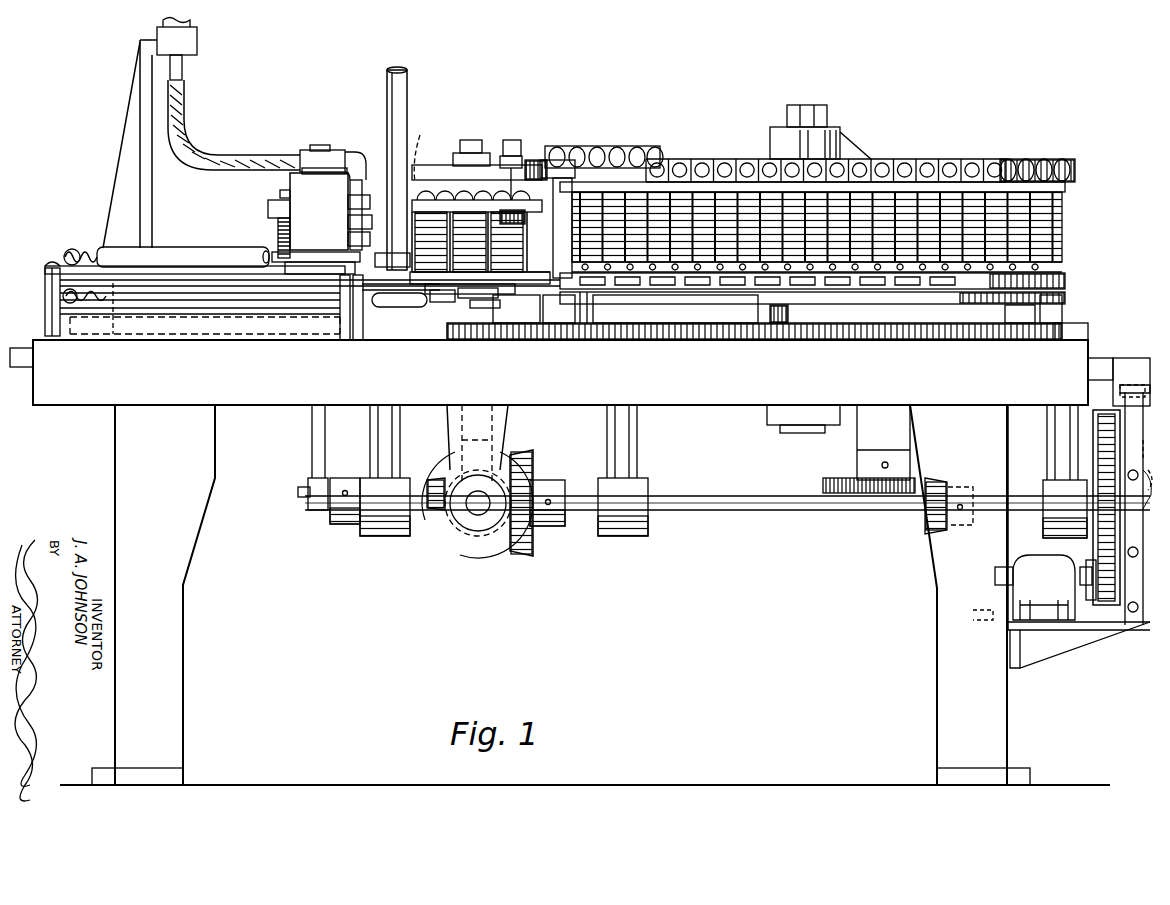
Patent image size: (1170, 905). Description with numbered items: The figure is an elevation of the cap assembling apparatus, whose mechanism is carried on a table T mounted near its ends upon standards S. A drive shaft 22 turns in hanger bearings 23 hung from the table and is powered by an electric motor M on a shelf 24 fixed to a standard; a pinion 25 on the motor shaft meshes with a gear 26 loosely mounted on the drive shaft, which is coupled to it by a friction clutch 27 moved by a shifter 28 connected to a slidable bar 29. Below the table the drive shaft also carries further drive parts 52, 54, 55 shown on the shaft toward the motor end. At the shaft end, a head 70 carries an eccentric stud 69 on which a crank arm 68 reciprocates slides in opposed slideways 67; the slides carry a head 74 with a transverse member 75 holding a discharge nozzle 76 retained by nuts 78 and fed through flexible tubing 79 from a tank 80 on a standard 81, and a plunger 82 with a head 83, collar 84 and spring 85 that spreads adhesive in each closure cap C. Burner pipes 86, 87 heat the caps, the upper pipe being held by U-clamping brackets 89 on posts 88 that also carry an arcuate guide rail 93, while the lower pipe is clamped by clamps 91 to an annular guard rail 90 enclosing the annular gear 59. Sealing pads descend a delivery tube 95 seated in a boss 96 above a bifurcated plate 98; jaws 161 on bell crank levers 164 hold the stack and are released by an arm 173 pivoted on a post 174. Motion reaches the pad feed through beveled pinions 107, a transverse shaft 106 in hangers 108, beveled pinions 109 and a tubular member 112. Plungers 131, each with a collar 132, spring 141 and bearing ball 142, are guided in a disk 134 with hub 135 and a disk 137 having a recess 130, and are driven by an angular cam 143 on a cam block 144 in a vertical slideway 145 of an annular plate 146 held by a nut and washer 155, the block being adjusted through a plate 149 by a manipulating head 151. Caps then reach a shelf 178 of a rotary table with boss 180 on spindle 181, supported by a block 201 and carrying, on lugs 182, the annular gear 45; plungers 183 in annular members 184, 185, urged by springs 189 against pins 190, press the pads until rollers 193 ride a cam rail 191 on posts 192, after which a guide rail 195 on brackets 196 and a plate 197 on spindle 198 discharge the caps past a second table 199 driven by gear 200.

The table T is at (268, 390).
The standard S is at (168, 590).
The closure cap C is at (490, 335).
The electric motor M is at (1043, 587).
The drive shaft 22 is at (713, 512).
The hanger bearings 23 is at (380, 442).
The shelf 24 is at (1062, 640).
The pinion 25 is at (1105, 600).
The gear 26 is at (1101, 412).
The friction clutch 27 is at (1138, 463).
The shifter 28 is at (1150, 625).
The bar 29 is at (22, 358).
The annular gear 45 is at (963, 340).
The bracket 52 is at (890, 430).
The brush 54 is at (840, 478).
The bevel gear 55 is at (937, 530).
The annular gear 59 is at (457, 335).
The slideways 67 is at (292, 184).
The crank arm 68 is at (312, 448).
The stud 69 is at (298, 491).
The head 70 is at (343, 525).
The head 74 is at (335, 162).
The transverse member 75 is at (268, 210).
The discharge nozzle 76 is at (365, 230).
The nuts 78 is at (366, 203).
The flexible tubing 79 is at (232, 157).
The tank 80 is at (195, 25).
The standard 81 is at (118, 163).
The plunger 82 is at (278, 236).
The head 83 is at (292, 262).
The collar 84 is at (288, 200).
The spring 85 is at (288, 220).
The burner pipe 86 is at (172, 262).
The burner pipe 87 is at (390, 310).
The posts 88 is at (46, 293).
The U-clamping brackets 89 is at (68, 250).
The annular guard rail 90 is at (93, 320).
The clamps 91 is at (58, 303).
The arcuate guide rail 93 is at (46, 272).
The delivery tube 95 is at (408, 97).
The boss 96 is at (388, 253).
The bifurcated plate 98 is at (302, 272).
The transverse shaft 106 is at (480, 508).
The beveled pinions 107 is at (530, 470).
The hangers 108 is at (505, 426).
The beveled pinions 109 is at (450, 476).
The tubular member 112 is at (462, 426).
The recess 130 is at (527, 268).
The plungers 131 is at (527, 236).
The annular collar 132 is at (527, 218).
The disk 134 is at (528, 201).
The hub 135 is at (450, 168).
The disk 137 is at (468, 283).
The spring 141 is at (527, 254).
The bearing ball 142 is at (419, 151).
The angular cam 143 is at (557, 169).
The cam block 144 is at (530, 160).
The vertical slideway 145 is at (540, 162).
The annular plate 146 is at (455, 165).
The plate 149 is at (490, 160).
The manipulating head 151 is at (512, 140).
The nut and washer 155 is at (472, 140).
The jaws 161 is at (399, 293).
The bell crank levers 164 is at (441, 313).
The arm 173 is at (341, 300).
The post 174 is at (352, 328).
The shelf 178 is at (1062, 297).
The boss 180 is at (840, 135).
The spindle 181 is at (828, 110).
The lugs 182 is at (790, 312).
The plungers 183 is at (942, 160).
The annular member 184 is at (1062, 277).
The annular member 185 is at (1062, 187).
The spring 189 is at (1062, 208).
The pin 190 is at (700, 268).
The cam rail 191 is at (612, 160).
The posts 192 is at (540, 278).
The rollers 193 is at (595, 145).
The guide rail 195 is at (482, 290).
The brackets 196 is at (479, 316).
The plate 197 is at (600, 285).
The spindle 198 is at (570, 280).
The second table 199 is at (645, 285).
The gear 200 is at (572, 341).
The block 201 is at (715, 330).